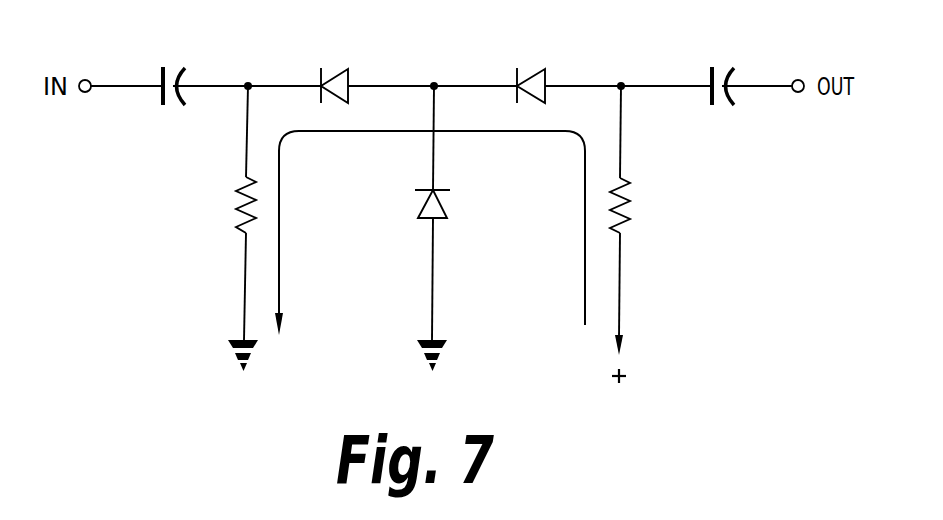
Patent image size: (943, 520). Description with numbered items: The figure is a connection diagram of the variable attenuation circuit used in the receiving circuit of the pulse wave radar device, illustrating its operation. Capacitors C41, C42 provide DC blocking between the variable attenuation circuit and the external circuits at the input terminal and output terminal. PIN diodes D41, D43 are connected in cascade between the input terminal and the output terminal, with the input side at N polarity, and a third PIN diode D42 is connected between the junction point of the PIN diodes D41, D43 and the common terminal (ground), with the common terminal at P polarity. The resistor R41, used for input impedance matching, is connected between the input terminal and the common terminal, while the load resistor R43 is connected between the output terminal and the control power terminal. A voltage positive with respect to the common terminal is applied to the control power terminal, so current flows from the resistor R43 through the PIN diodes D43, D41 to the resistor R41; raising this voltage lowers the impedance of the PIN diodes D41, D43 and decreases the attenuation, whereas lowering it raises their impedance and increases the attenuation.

The capacitor C41 is at (175, 68).
The capacitor C42 is at (721, 68).
The PIN diode D41 is at (333, 68).
The PIN diode D42 is at (453, 206).
The PIN diode D43 is at (531, 68).
The resistor R41 is at (225, 205).
The load resistor R43 is at (641, 205).